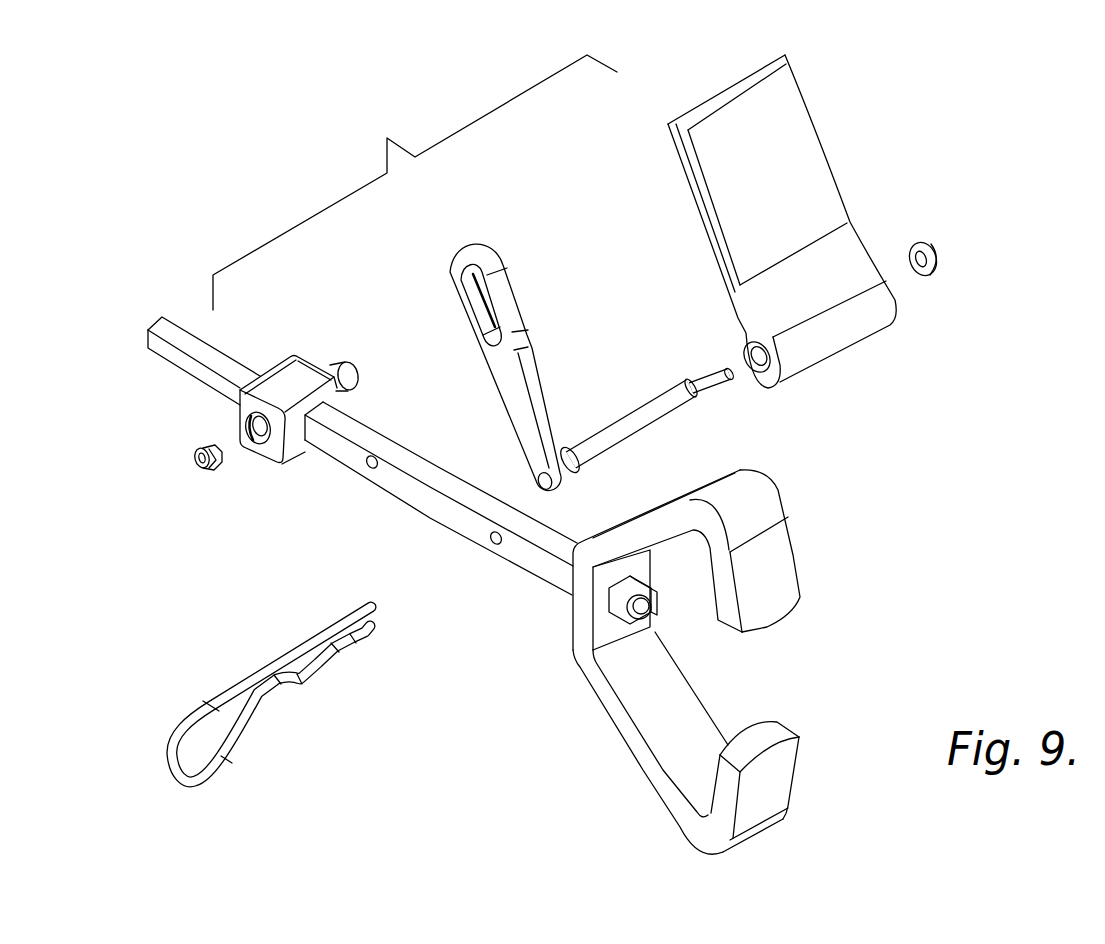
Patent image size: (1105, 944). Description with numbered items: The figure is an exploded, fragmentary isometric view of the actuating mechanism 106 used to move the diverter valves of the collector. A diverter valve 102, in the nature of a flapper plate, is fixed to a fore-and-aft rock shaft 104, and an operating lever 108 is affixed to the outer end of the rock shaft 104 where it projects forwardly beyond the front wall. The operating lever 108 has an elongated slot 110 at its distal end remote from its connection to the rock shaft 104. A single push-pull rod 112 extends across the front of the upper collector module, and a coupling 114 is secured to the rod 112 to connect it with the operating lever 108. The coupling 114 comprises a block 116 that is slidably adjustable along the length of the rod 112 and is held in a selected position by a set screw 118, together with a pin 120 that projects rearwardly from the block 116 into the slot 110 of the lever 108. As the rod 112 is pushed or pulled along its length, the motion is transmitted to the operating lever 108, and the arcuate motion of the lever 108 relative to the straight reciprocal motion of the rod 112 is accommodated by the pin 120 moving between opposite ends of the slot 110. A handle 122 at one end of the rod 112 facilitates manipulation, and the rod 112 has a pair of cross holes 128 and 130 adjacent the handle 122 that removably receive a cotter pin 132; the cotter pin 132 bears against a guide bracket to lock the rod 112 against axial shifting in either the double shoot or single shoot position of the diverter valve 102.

The diverter valve 102 is at (842, 173).
The rock shaft 104 is at (665, 403).
The actuating mechanism 106 is at (589, 622).
The operating lever 108 is at (507, 367).
The elongated slot 110 is at (473, 293).
The push-pull rod 112 is at (441, 492).
The coupling 114 is at (275, 406).
The block 116 is at (293, 447).
The set screw 118 is at (203, 448).
The pin 120 is at (346, 368).
The handle 122 is at (783, 560).
The cross hole 128 is at (375, 458).
The cross hole 130 is at (490, 542).
The cotter pin 132 is at (237, 688).